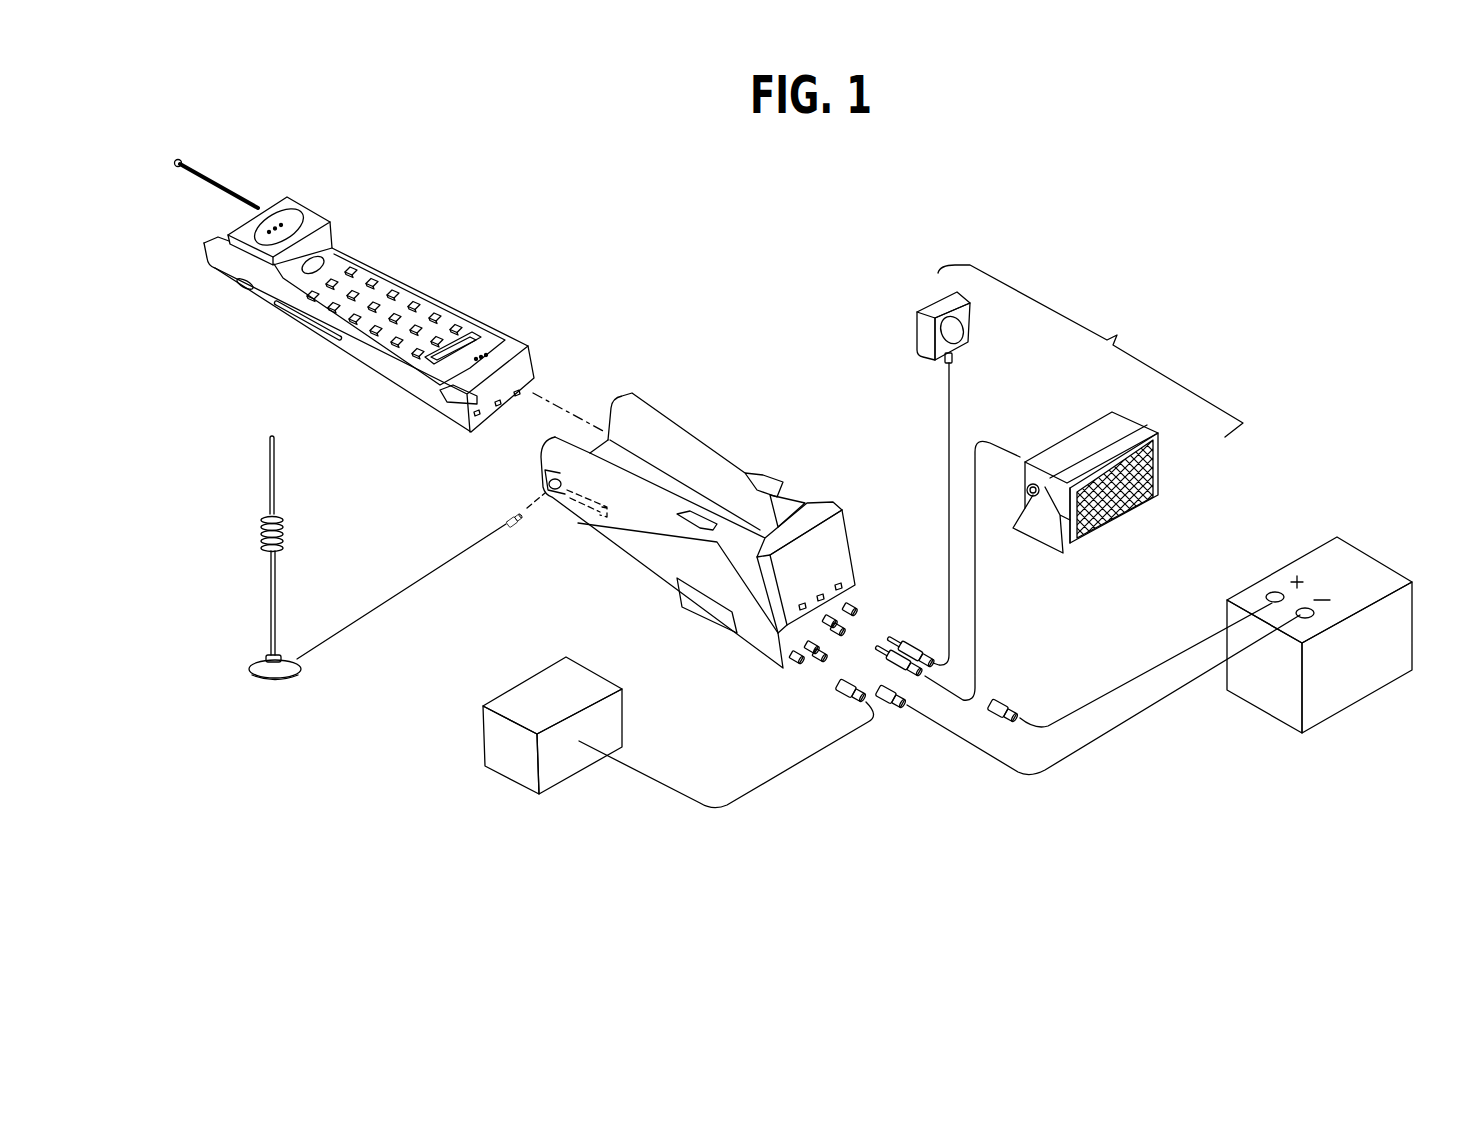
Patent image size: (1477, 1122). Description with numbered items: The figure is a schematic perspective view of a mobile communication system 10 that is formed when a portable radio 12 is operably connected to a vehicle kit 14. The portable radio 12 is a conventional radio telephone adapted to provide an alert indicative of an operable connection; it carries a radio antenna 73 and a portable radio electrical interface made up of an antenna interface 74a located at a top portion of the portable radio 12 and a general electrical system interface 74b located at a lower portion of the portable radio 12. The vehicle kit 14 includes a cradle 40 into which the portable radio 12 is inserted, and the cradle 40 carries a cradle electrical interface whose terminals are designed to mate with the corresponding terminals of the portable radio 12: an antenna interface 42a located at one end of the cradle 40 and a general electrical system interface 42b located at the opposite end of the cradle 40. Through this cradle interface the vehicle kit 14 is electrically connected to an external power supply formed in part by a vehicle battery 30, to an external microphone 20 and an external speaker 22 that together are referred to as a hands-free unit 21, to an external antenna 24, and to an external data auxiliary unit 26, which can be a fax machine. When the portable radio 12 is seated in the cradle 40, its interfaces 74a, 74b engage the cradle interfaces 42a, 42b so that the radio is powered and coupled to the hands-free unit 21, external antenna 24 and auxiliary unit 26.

The mobile communication system 10 is at (424, 121).
The portable radio 12 is at (432, 252).
The vehicle kit 14 is at (764, 402).
The external microphone 20 is at (927, 310).
The hands-free unit 21 is at (1090, 351).
The external speaker 22 is at (1045, 447).
The external antenna 24 is at (267, 477).
The external data auxiliary unit 26 is at (498, 775).
The vehicle battery 30 is at (1375, 560).
The cradle 40 is at (620, 398).
The antenna interface 42a is at (548, 485).
The general electrical system interface 42b is at (790, 606).
The radio antenna 73 is at (205, 177).
The antenna interface 74a is at (233, 280).
The general electrical system interface 74b is at (477, 418).